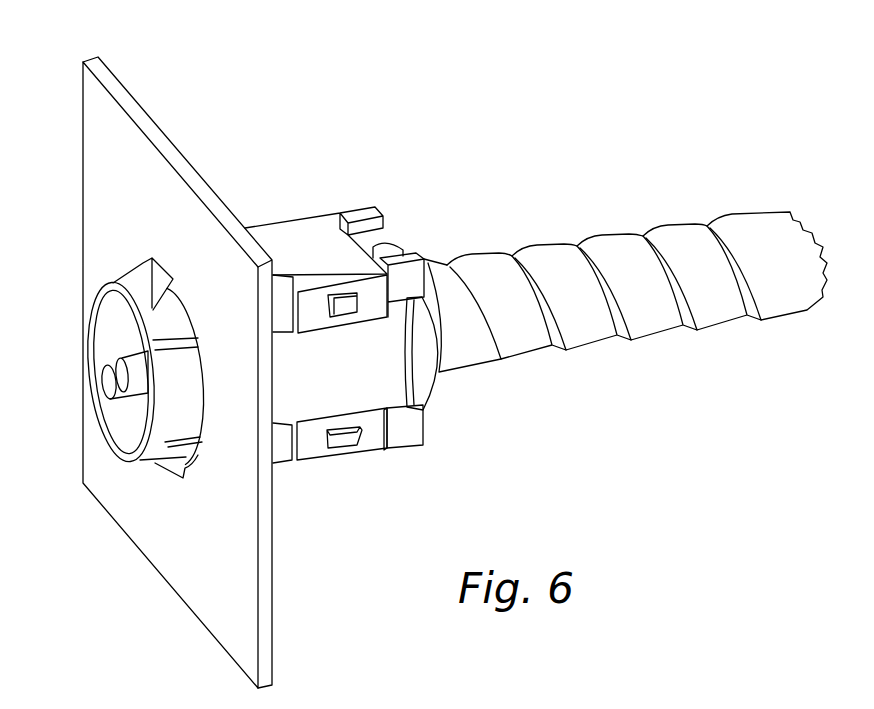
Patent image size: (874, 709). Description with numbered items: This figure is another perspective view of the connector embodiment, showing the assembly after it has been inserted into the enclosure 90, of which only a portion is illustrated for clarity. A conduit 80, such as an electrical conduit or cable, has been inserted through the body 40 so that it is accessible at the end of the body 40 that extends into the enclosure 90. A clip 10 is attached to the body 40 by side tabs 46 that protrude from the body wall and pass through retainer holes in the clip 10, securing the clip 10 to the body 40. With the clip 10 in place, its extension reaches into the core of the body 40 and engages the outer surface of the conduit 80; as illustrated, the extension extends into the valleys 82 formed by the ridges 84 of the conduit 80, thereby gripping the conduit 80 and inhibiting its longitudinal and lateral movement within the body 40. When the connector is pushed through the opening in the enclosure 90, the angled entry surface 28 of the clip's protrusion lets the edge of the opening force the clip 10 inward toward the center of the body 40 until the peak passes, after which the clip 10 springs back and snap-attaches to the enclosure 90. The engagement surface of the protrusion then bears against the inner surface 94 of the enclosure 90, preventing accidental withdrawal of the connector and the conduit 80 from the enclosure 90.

The clip 10 is at (298, 243).
The angled entry surface 28 is at (147, 279).
The body 40 is at (431, 392).
The side tab 46 is at (345, 438).
The conduit 80 is at (634, 254).
The valleys 82 is at (620, 333).
The ridges 84 is at (783, 315).
The enclosure 90 is at (270, 568).
The inner surface 94 is at (97, 125).